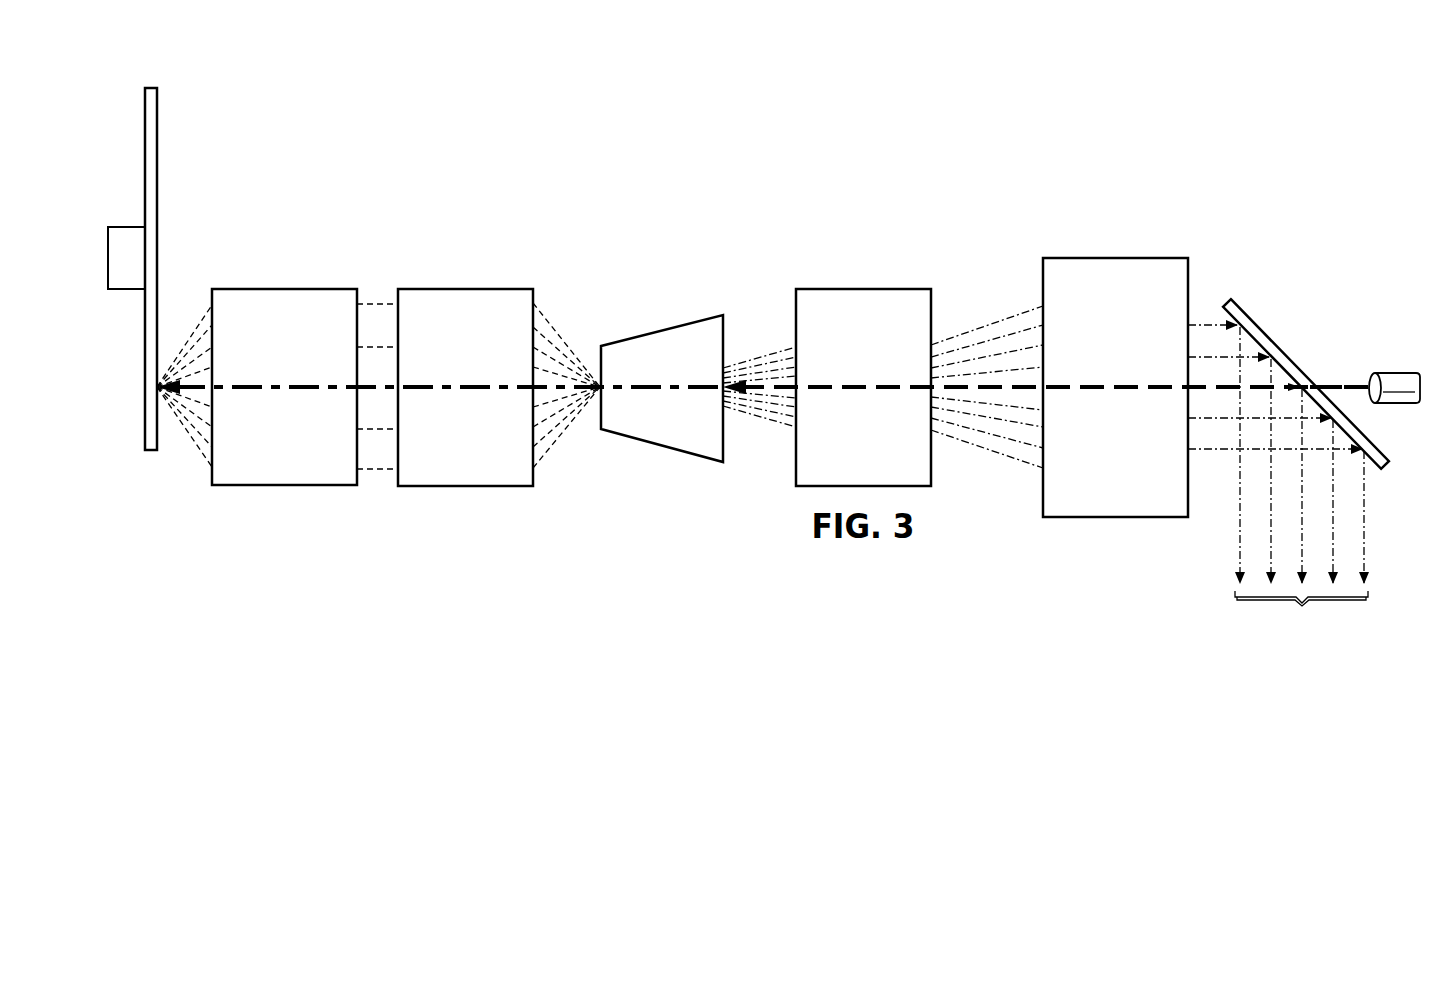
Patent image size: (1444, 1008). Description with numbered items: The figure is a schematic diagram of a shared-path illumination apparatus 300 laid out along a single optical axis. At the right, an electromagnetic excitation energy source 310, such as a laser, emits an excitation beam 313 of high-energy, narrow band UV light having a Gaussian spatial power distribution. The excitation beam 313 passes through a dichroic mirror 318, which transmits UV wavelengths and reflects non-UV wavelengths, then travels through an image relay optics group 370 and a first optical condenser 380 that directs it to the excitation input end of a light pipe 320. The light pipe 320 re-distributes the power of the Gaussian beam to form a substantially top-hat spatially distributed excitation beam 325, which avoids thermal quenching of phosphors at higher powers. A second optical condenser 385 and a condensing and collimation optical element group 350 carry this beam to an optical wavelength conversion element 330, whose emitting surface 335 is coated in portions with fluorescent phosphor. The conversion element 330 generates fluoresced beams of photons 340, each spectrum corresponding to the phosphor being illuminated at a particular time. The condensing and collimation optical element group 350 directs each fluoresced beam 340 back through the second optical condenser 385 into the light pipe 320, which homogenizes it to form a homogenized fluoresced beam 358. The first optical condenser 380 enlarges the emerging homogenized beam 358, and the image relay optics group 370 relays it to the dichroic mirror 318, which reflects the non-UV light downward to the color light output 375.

The shared-path illumination apparatus 300 is at (993, 90).
The electromagnetic excitation energy source 310 is at (1405, 404).
The excitation beam 313 is at (1342, 384).
The dichroic mirror 318 is at (1226, 299).
The light pipe 320 is at (661, 329).
The top-hat spatially distributed excitation beam 325 is at (258, 384).
The optical wavelength conversion element 330 is at (150, 86).
The emitting surface 335 is at (158, 119).
The fluoresced beam of photons 340 is at (190, 451).
The condensing and collimation optical element group 350 is at (283, 288).
The homogenized fluoresced beam 358 is at (775, 427).
The image relay optics group 370 is at (1115, 257).
The output 375 is at (1278, 504).
The first optical condenser 380 is at (864, 288).
The second optical condenser 385 is at (466, 288).